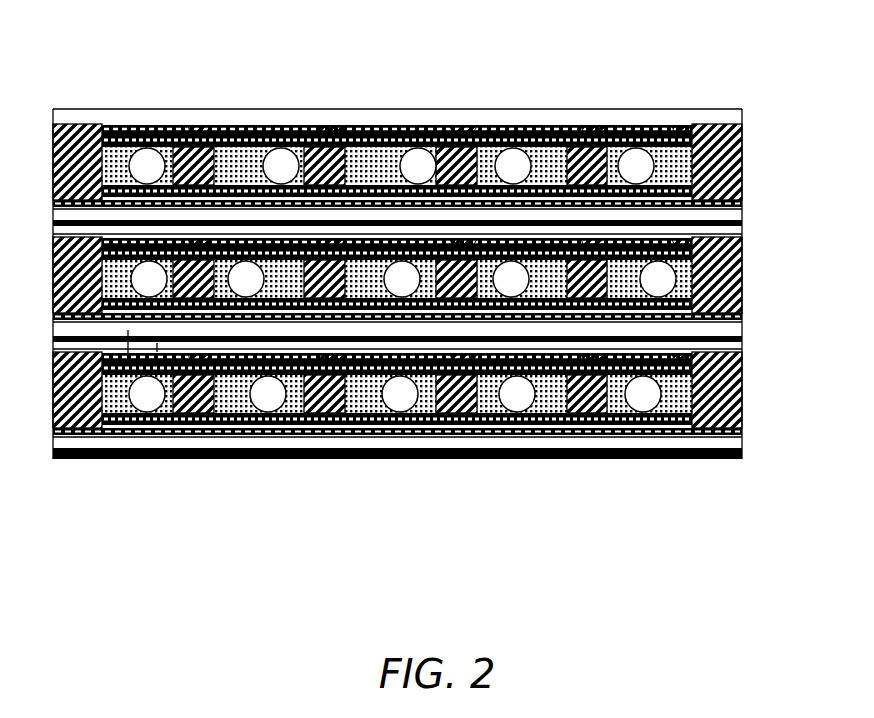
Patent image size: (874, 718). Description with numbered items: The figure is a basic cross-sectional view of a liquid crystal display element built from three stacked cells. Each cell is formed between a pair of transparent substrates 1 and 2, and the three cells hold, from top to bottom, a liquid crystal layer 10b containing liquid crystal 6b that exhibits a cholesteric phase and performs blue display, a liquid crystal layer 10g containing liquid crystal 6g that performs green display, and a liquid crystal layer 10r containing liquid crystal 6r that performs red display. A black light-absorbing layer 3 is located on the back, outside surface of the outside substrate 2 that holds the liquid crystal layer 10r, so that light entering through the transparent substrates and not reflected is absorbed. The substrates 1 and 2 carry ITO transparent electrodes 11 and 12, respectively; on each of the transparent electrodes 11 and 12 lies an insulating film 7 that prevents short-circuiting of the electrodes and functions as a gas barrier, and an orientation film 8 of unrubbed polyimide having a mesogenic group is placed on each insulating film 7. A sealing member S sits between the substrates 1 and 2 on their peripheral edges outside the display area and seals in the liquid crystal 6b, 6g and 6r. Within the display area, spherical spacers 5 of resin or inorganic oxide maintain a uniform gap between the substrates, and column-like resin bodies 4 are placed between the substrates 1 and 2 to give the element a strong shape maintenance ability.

The substrate 1 is at (148, 232).
The substrate 2 is at (167, 136).
The black light-absorbing layer 3 is at (197, 460).
The column-like body 4 is at (202, 145).
The spacer 5 is at (282, 170).
The liquid crystal 6b is at (250, 155).
The liquid crystal 6g is at (367, 305).
The liquid crystal 6r is at (548, 383).
The insulating film 7 is at (482, 128).
The orientation film 8 is at (592, 128).
The transparent electrode 11 is at (370, 236).
The transparent electrode 12 is at (415, 170).
The sealing member S is at (711, 128).
The liquid crystal layer 10b is at (743, 126).
The liquid crystal layer 10g is at (743, 239).
The liquid crystal layer 10r is at (743, 354).